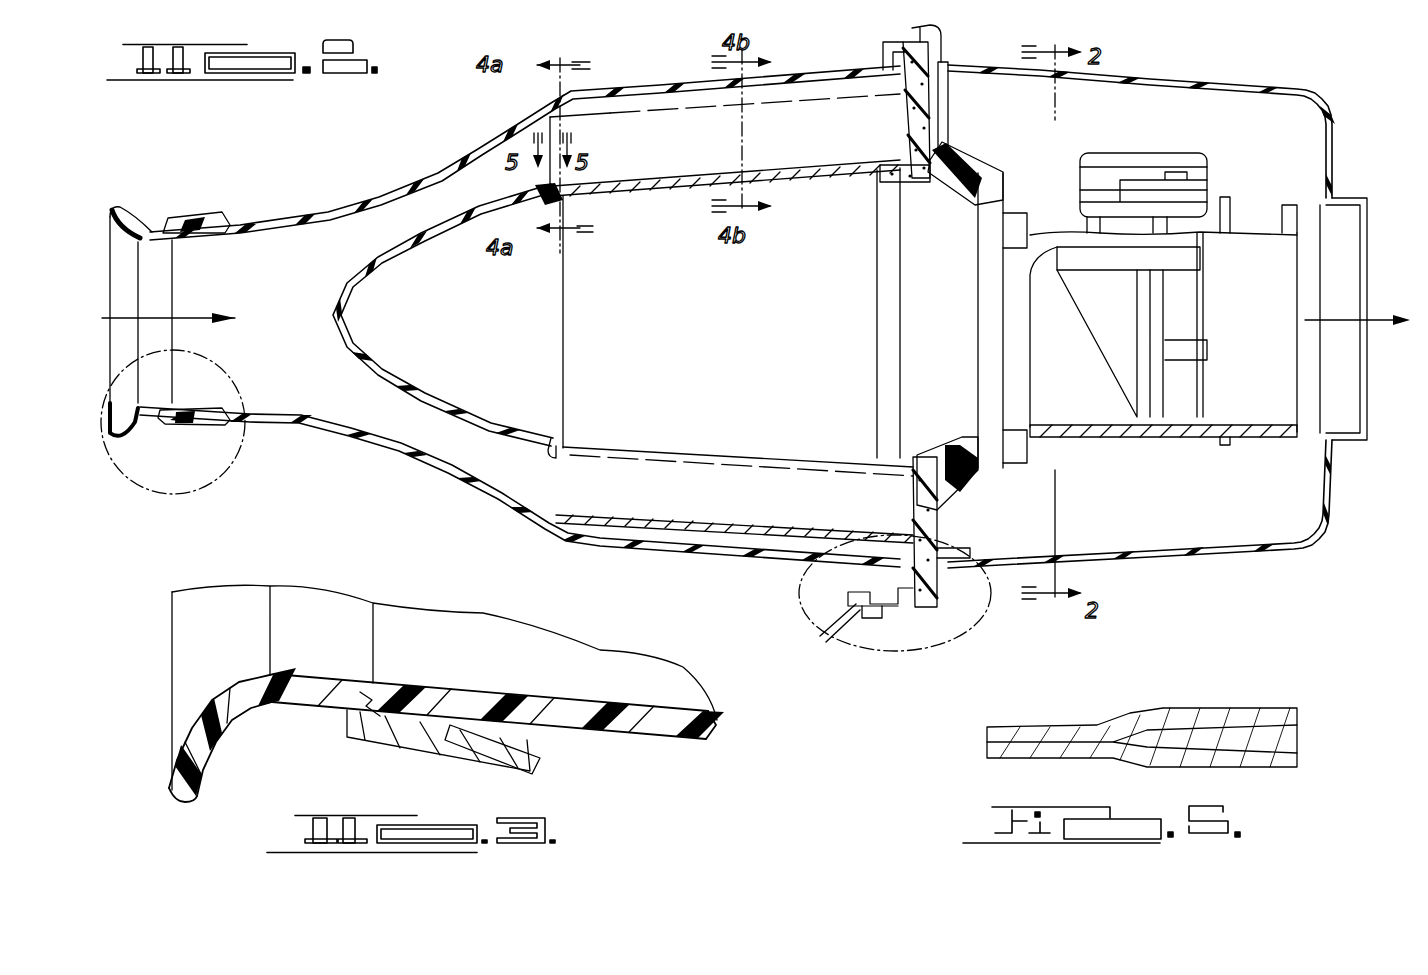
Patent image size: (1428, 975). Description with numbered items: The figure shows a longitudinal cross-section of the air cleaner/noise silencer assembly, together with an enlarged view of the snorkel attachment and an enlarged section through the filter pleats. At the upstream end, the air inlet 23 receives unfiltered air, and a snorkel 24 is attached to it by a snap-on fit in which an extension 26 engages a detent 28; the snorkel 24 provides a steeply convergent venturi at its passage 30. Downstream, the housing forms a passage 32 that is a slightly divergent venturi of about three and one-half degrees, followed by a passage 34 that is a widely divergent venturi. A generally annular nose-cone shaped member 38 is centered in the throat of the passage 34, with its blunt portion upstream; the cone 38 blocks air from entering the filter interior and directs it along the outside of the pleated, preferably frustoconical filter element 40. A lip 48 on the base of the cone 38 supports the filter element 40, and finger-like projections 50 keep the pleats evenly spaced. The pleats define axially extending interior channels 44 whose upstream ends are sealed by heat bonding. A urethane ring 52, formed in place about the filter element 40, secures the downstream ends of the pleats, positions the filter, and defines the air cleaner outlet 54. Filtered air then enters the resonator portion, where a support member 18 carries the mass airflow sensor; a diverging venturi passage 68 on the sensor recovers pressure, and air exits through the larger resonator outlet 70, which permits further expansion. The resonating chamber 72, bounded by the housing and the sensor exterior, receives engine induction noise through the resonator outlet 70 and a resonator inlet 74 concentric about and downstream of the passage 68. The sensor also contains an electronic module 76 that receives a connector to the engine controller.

In FIG. 2, the support member 18 is at (948, 478).
In FIG. 2, the air inlet 23 is at (105, 238).
In FIG. 2, the snorkel 24 is at (125, 425).
In FIG. 3, the snorkel 24 is at (200, 752).
In FIG. 3, the extension 26 is at (535, 748).
In FIG. 3, the detent 28 is at (490, 752).
In FIG. 2, the passage 30 is at (135, 224).
In FIG. 2, the passage 32 is at (262, 216).
In FIG. 2, the passage 34 is at (440, 175).
In FIG. 2, the nose-cone shaped member 38 is at (365, 275).
In FIG. 2, the filter element 40 is at (548, 478).
In FIG. 5, the interior channels 44 is at (1283, 735).
In FIG. 2, the lip 48 is at (565, 198).
In FIG. 2, the finger-like projections 50 is at (555, 184).
In FIG. 2, the urethane ring 52 is at (930, 55).
In FIG. 2, the air cleaner outlet 54 is at (887, 182).
In FIG. 2, the diverging venturi passage 68 is at (1265, 440).
In FIG. 2, the resonator outlet 70 is at (1362, 440).
In FIG. 2, the resonating chamber 72 is at (1235, 134).
In FIG. 2, the resonator inlet 74 is at (1308, 215).
In FIG. 2, the electronic module 76 is at (1082, 160).